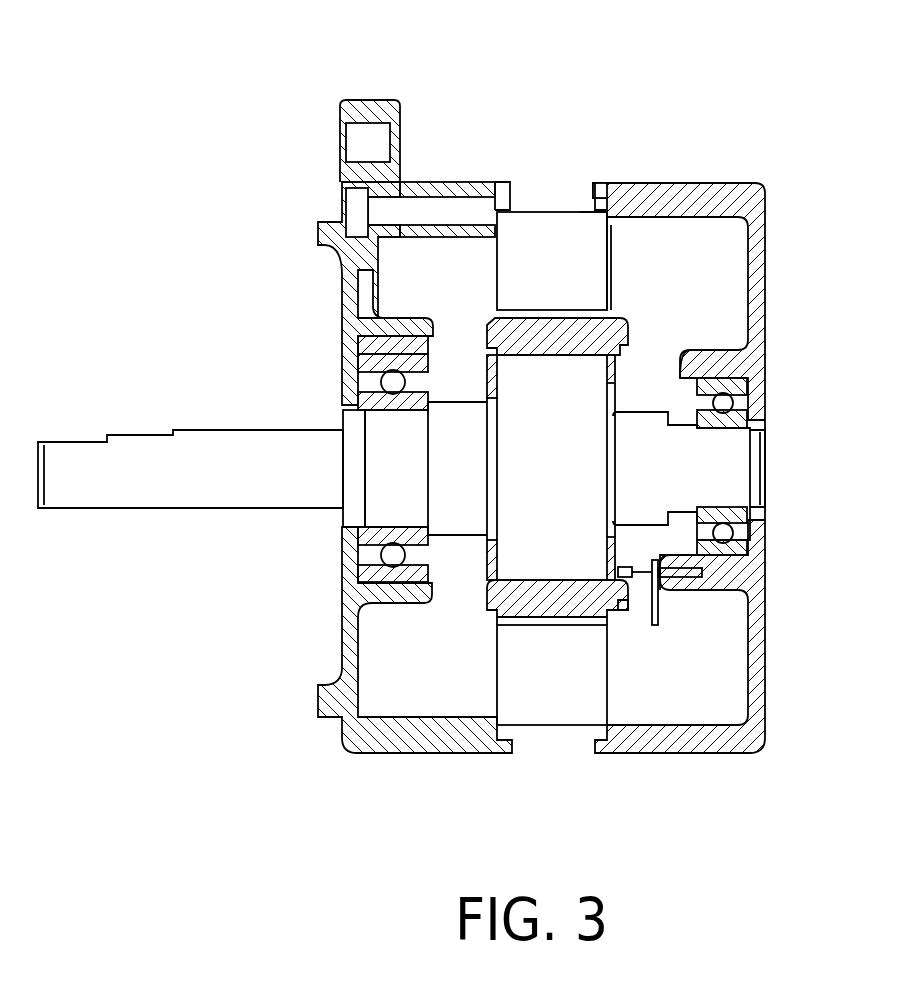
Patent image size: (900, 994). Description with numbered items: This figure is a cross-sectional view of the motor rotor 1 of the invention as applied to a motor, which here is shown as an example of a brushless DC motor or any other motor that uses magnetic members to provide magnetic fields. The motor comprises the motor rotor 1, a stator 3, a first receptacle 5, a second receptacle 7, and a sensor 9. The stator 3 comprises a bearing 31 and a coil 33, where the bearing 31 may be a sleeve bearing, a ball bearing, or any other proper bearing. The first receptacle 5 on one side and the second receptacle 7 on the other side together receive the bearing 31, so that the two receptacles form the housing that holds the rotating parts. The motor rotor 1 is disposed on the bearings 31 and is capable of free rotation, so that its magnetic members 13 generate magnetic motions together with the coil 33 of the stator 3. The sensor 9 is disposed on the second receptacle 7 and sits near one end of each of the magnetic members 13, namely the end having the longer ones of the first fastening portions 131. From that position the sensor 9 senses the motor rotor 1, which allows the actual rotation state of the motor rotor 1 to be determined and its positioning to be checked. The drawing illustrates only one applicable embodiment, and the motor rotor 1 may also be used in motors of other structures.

The motor rotor 1 is at (264, 516).
The stator 3 is at (377, 453).
The bearing 31 is at (350, 362).
The coil 33 is at (523, 275).
The first receptacle 5 is at (403, 96).
The second receptacle 7 is at (770, 188).
The sensor 9 is at (640, 588).
The magnetic member 13 is at (549, 634).
The first fastening portion 131 is at (623, 600).